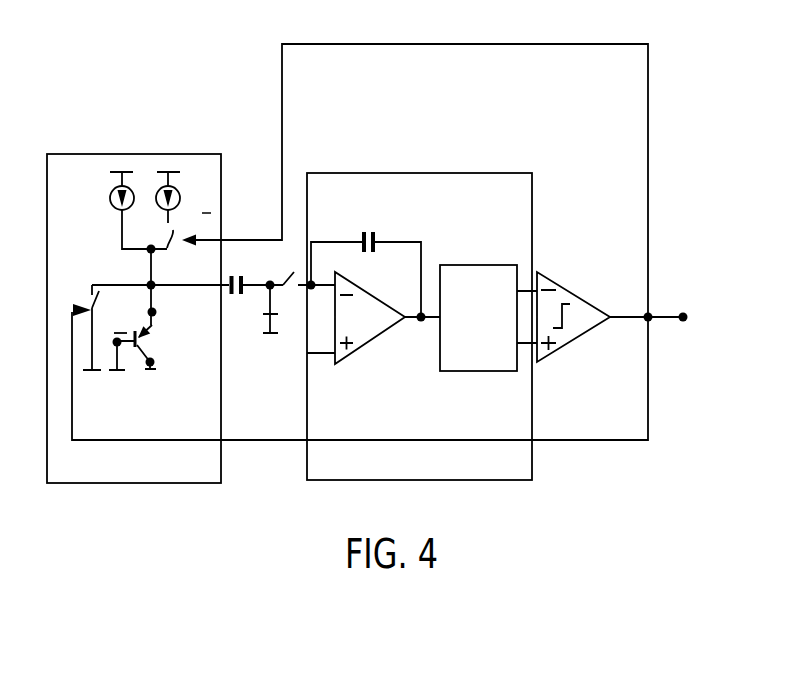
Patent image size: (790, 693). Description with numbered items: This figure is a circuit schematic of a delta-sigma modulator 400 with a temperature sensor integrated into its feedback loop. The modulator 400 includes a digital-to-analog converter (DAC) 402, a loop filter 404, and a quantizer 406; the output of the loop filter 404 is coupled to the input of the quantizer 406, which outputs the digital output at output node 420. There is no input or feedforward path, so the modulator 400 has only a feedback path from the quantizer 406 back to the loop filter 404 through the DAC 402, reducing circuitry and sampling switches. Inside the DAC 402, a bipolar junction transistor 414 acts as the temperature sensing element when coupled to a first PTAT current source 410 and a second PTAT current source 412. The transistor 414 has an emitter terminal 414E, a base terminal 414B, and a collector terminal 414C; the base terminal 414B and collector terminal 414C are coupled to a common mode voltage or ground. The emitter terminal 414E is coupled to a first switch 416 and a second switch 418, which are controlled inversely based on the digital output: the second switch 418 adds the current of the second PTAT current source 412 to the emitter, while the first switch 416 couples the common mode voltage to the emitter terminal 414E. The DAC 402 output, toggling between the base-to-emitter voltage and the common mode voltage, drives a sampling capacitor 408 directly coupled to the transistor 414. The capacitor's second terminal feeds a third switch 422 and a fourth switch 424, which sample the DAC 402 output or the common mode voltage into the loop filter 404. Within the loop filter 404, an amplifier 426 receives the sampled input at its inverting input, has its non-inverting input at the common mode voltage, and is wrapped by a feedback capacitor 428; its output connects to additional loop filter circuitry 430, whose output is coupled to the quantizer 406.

The delta-sigma modulator 400 is at (118, 105).
The digital-to-analog converter 402 is at (205, 153).
The loop filter 404 is at (410, 172).
The quantizer 406 is at (575, 290).
The sampling capacitor 408 is at (237, 275).
The first PTAT current source 410 is at (112, 206).
The second PTAT current source 412 is at (180, 197).
The bipolar junction transistor 414 is at (137, 345).
The base terminal 414B is at (119, 344).
The collector terminal 414C is at (153, 364).
The emitter terminal 414E is at (154, 310).
The first switch 416 is at (98, 292).
The second switch 418 is at (189, 243).
The output node 420 is at (683, 311).
The third switch 422 is at (270, 309).
The fourth switch 424 is at (290, 276).
The amplifier 426 is at (376, 340).
The capacitor 428 is at (371, 231).
The additional loop filter circuitry 430 is at (477, 265).